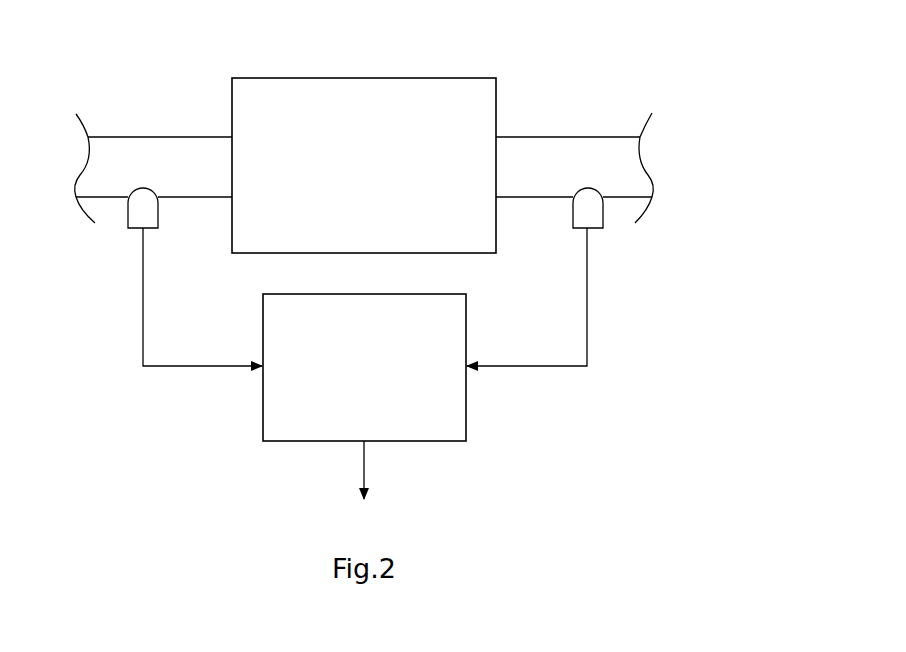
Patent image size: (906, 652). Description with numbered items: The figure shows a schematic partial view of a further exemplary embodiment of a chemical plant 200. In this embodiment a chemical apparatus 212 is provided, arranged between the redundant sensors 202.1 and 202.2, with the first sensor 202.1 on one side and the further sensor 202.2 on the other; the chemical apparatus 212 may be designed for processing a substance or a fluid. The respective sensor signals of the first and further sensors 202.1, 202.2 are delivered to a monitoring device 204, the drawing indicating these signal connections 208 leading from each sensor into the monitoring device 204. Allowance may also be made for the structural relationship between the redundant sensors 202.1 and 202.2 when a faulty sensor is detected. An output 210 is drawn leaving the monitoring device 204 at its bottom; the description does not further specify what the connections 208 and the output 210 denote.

The chemical plant 200 is at (694, 104).
The chemical apparatus 212 is at (365, 88).
The first sensor 202.1 is at (140, 207).
The further sensor 202.2 is at (592, 207).
The signal line 208 is at (142, 306).
The monitoring device 204 is at (364, 367).
The output signal 210 is at (365, 462).